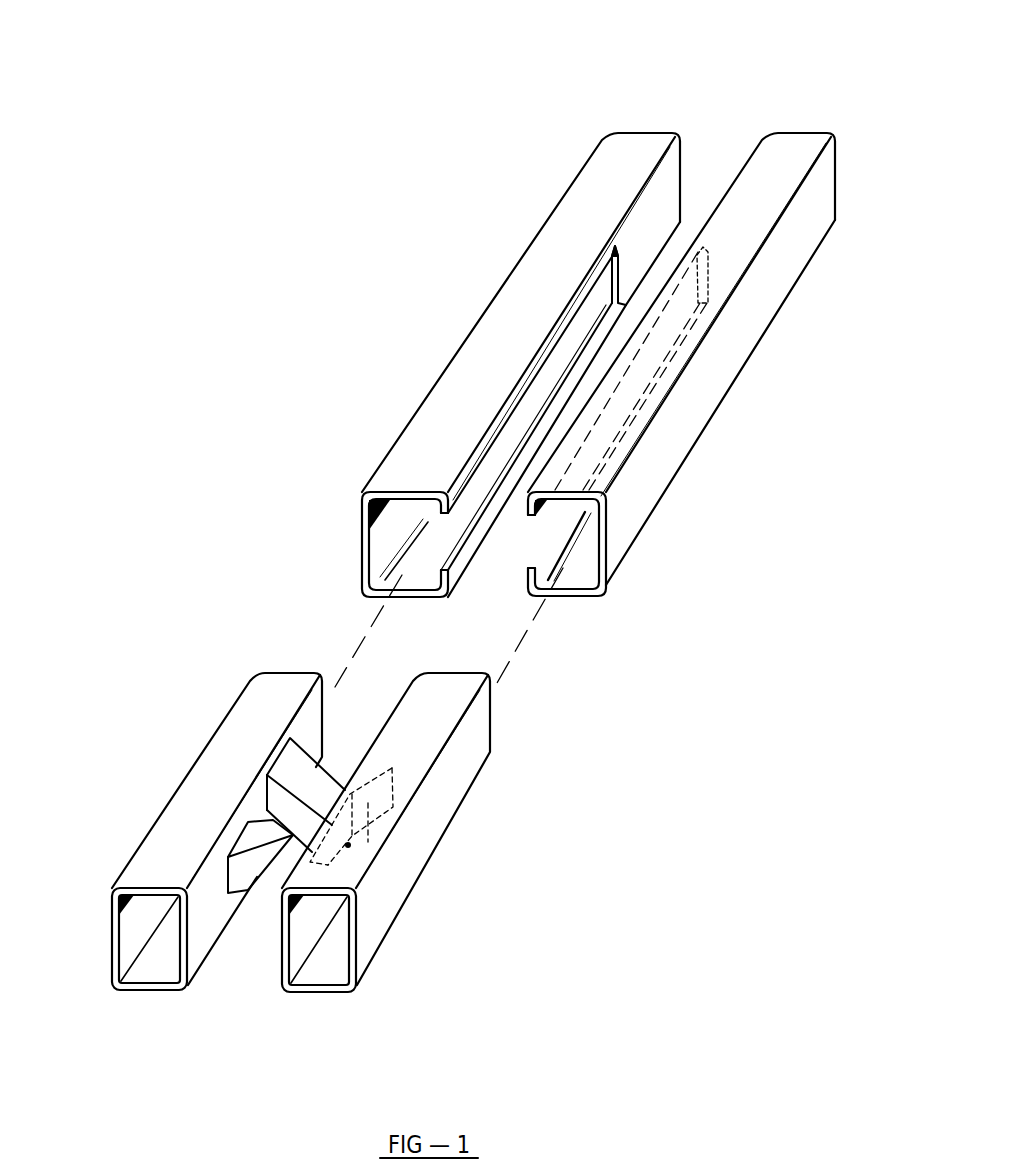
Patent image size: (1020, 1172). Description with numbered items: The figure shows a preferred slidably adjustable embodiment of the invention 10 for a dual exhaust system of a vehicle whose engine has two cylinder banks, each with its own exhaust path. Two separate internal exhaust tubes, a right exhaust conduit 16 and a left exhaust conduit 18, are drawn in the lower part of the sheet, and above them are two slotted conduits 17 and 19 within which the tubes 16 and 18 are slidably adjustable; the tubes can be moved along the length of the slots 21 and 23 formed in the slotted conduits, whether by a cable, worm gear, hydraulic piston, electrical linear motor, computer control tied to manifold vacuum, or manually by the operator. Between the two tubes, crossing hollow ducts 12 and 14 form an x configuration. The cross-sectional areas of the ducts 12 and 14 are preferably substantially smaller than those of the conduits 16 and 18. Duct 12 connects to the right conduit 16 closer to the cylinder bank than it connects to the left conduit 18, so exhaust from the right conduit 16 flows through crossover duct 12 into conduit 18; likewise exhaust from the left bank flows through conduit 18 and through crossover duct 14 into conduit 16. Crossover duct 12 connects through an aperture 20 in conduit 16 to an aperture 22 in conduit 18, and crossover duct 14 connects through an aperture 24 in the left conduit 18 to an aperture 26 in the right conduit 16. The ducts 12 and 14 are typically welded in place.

The invention 10 is at (342, 303).
The crossover duct 12 is at (265, 857).
The crossover duct 14 is at (297, 770).
The right exhaust conduit 16 is at (213, 782).
The slotted conduit 17 is at (527, 305).
The left exhaust conduit 18 is at (427, 820).
The slotted conduit 19 is at (730, 242).
The aperture 20 is at (243, 838).
The slot 21 is at (478, 487).
The aperture 22 is at (373, 810).
The slot 23 is at (542, 523).
The aperture 24 is at (348, 845).
The aperture 26 is at (265, 781).